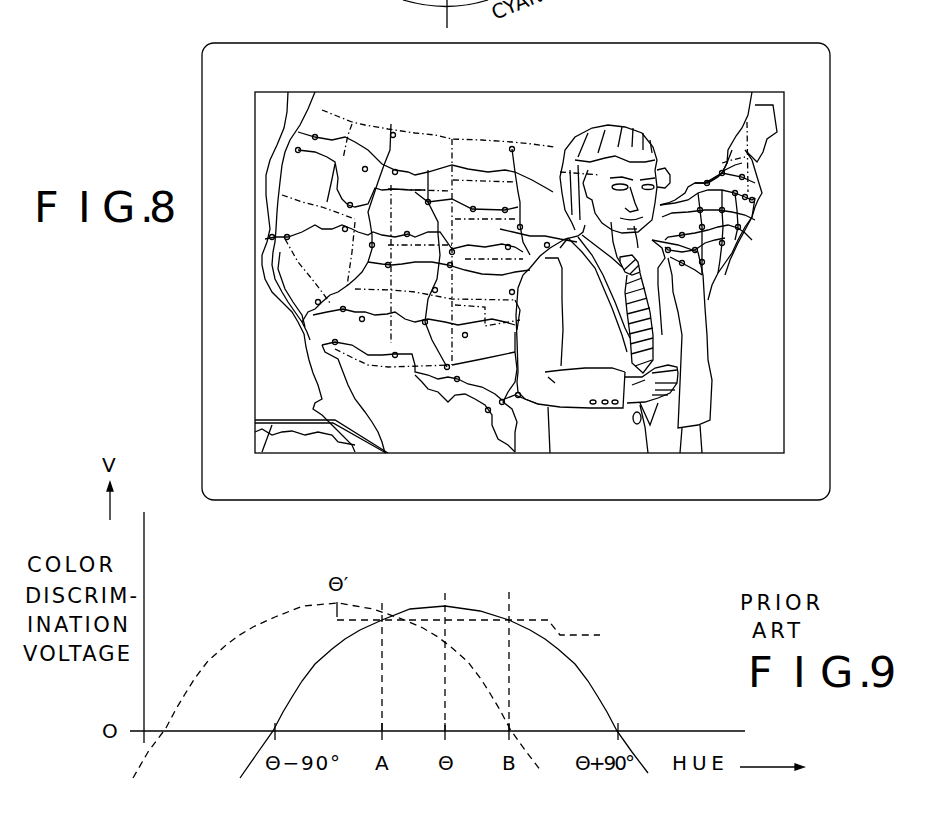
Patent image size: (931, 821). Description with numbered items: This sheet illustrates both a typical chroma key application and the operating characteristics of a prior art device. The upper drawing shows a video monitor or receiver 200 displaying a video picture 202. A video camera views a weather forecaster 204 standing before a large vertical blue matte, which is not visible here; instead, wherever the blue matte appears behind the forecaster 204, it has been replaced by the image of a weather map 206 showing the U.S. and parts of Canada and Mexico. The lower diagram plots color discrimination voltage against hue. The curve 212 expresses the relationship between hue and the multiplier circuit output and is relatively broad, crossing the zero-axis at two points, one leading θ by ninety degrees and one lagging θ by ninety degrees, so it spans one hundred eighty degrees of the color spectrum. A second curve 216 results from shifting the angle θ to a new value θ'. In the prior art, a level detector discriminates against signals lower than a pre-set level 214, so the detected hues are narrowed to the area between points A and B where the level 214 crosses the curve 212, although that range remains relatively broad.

In FIG. 8, the video monitor or receiver 200 is at (830, 111).
In FIG. 8, the video picture 202 is at (784, 320).
In FIG. 8, the weather forecaster 204 is at (641, 130).
In FIG. 8, the weather map 206 is at (320, 124).
In FIG. 9, the curve 212 is at (592, 680).
In FIG. 9, the pre-set level 214 is at (497, 637).
In FIG. 9, the second curve 216 is at (203, 660).